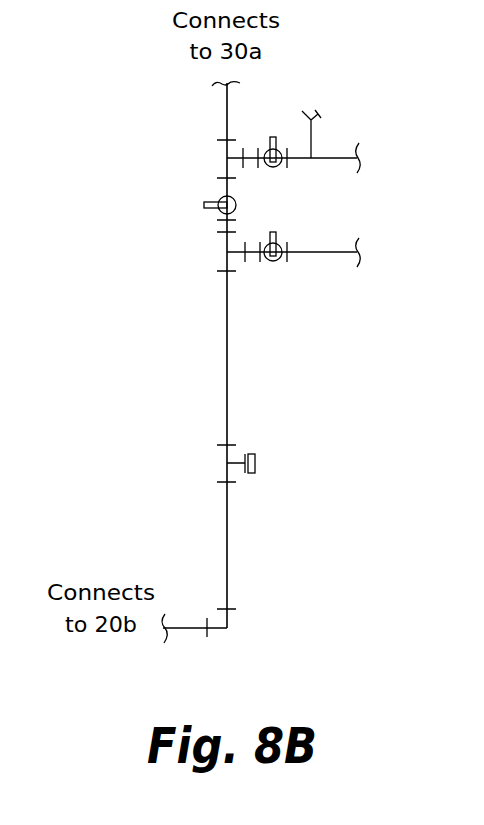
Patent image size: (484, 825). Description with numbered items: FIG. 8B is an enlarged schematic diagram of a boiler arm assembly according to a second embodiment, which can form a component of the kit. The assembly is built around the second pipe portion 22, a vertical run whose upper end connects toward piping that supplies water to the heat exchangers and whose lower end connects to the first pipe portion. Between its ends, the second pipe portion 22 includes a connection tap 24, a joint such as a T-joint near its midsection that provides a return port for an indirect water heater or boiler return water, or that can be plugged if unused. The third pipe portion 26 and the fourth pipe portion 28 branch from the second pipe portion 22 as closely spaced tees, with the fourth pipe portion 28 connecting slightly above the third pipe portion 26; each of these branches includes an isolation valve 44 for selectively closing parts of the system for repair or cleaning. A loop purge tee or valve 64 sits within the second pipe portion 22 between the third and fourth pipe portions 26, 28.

The second pipe portion 22 is at (226, 382).
The connection tap 24 is at (256, 458).
The third pipe portion 26 is at (308, 252).
The fourth pipe portion 28 is at (328, 158).
The isolation valve 44 is at (273, 133).
The loop purge tee or valve 64 is at (222, 200).